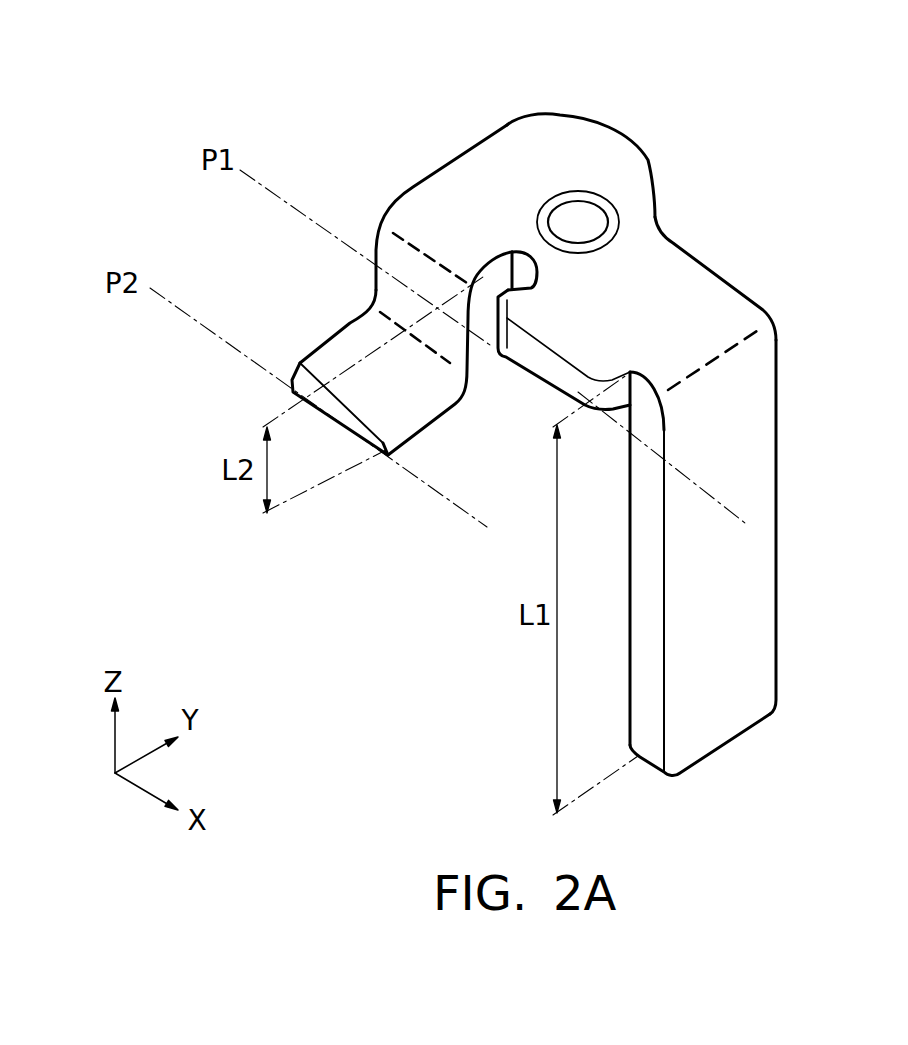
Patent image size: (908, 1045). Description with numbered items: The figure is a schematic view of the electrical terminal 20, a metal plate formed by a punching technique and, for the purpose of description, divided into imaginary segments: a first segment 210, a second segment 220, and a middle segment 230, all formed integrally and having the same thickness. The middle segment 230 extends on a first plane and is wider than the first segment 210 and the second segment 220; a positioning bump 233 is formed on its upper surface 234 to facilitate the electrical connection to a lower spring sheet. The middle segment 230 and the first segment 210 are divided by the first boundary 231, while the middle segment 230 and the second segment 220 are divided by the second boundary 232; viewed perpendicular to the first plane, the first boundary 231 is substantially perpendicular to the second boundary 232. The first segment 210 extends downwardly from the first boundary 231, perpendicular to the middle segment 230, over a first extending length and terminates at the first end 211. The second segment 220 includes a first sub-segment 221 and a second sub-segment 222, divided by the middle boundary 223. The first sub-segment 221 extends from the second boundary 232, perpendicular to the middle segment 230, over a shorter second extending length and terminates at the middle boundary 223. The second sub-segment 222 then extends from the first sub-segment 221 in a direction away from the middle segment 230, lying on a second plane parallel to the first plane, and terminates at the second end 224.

The electrical terminal 20 is at (136, 100).
The first segment 210 is at (790, 485).
The first end 211 is at (720, 750).
The second segment 220 is at (472, 412).
The first sub-segment 221 is at (397, 297).
The second sub-segment 222 is at (363, 340).
The middle boundary 223 is at (365, 312).
The second end 224 is at (307, 373).
The middle segment 230 is at (720, 260).
The first boundary 231 is at (720, 353).
The second boundary 232 is at (411, 237).
The positioning bump 233 is at (578, 222).
The upper surface 234 is at (522, 162).